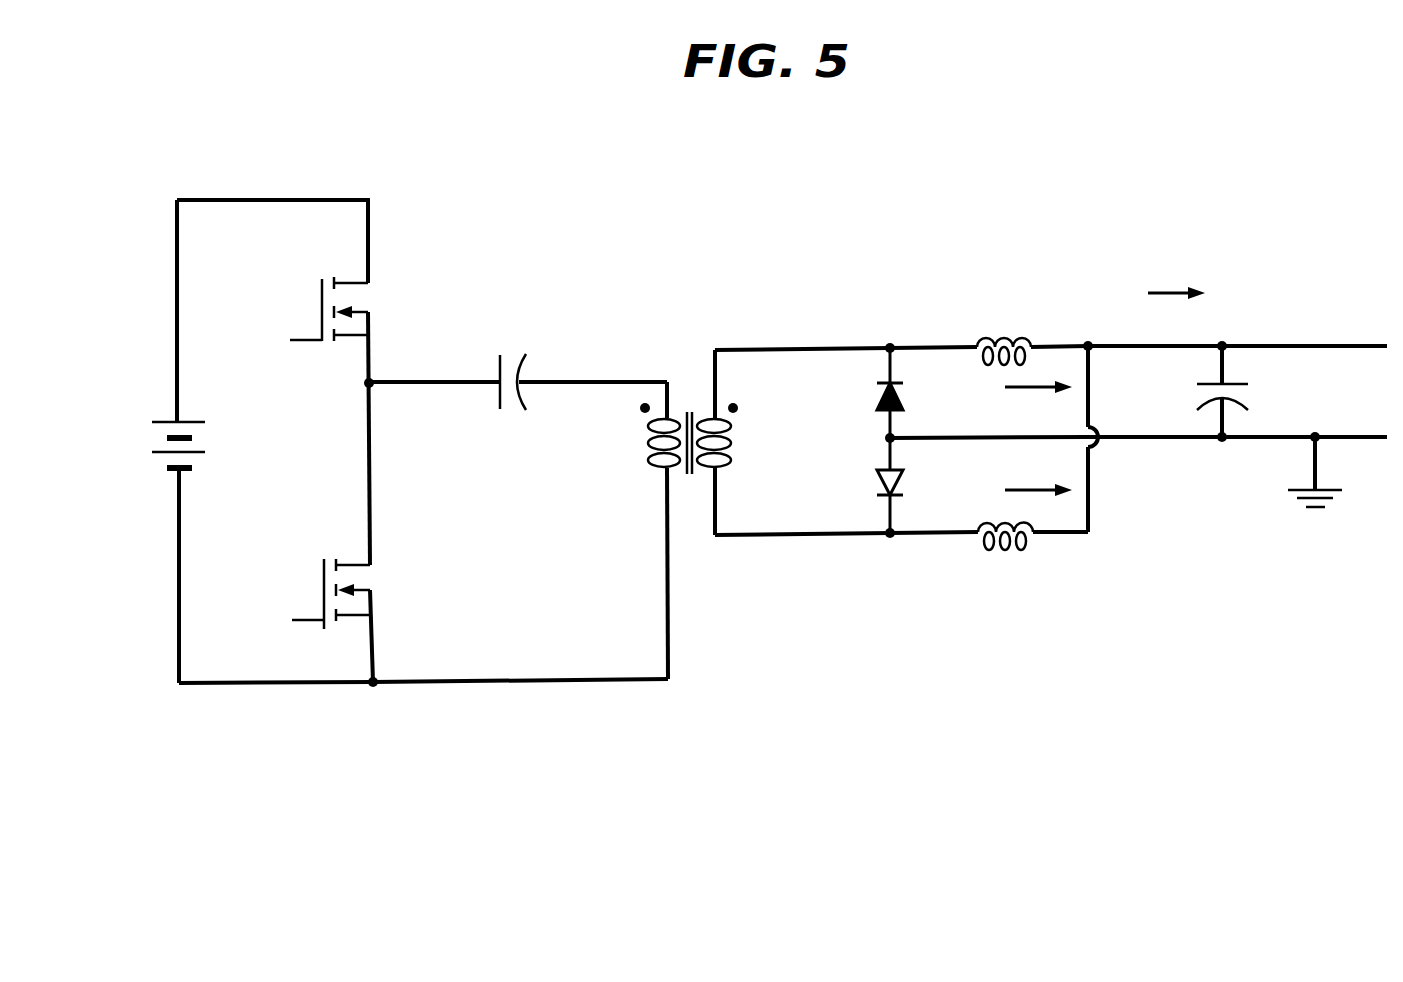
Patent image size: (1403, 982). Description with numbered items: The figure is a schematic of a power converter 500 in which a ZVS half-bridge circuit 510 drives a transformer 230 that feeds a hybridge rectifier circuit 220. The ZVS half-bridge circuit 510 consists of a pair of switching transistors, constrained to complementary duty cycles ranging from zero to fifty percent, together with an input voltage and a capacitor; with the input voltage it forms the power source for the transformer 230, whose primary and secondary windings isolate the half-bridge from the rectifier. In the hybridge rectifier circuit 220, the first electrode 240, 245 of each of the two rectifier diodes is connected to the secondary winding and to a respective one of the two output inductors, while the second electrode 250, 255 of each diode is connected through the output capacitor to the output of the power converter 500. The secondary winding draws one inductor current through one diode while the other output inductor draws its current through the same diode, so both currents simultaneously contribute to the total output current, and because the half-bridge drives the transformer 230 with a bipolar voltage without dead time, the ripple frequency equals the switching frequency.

The power converter 500 is at (785, 667).
The ZVS half-bridge circuit 510 is at (398, 217).
The transformer 230 is at (688, 370).
The hybridge rectifier circuit 220 is at (1054, 318).
The first electrode of rectifier diode D1 240 is at (888, 378).
The first electrode of rectifier diode D2 245 is at (887, 498).
The second electrode of rectifier diode D1 250 is at (886, 412).
The second electrode of rectifier diode D2 255 is at (878, 470).